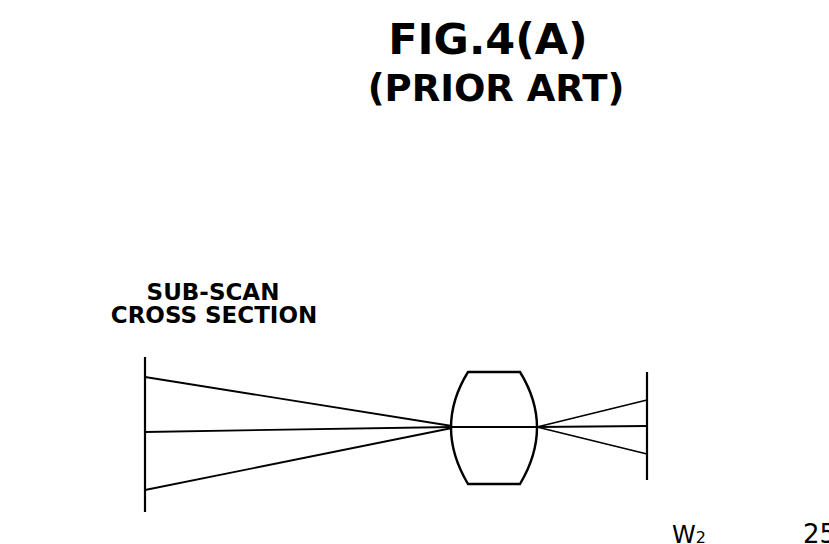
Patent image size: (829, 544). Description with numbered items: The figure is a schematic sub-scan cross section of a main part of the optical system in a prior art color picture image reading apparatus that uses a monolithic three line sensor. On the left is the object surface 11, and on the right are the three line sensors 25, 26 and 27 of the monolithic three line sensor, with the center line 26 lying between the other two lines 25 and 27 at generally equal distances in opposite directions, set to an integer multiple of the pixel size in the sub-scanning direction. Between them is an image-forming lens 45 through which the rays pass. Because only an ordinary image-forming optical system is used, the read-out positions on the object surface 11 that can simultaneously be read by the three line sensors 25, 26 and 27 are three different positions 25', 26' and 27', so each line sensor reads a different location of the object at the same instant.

The object surface 11 is at (145, 360).
The read-out position 27' is at (247, 394).
The read-out position 26' is at (258, 435).
The read-out position 25' is at (262, 471).
The imaging lens 45 is at (497, 384).
The line sensor 25 is at (631, 391).
The center line 26 is at (633, 428).
The line sensor 27 is at (637, 468).